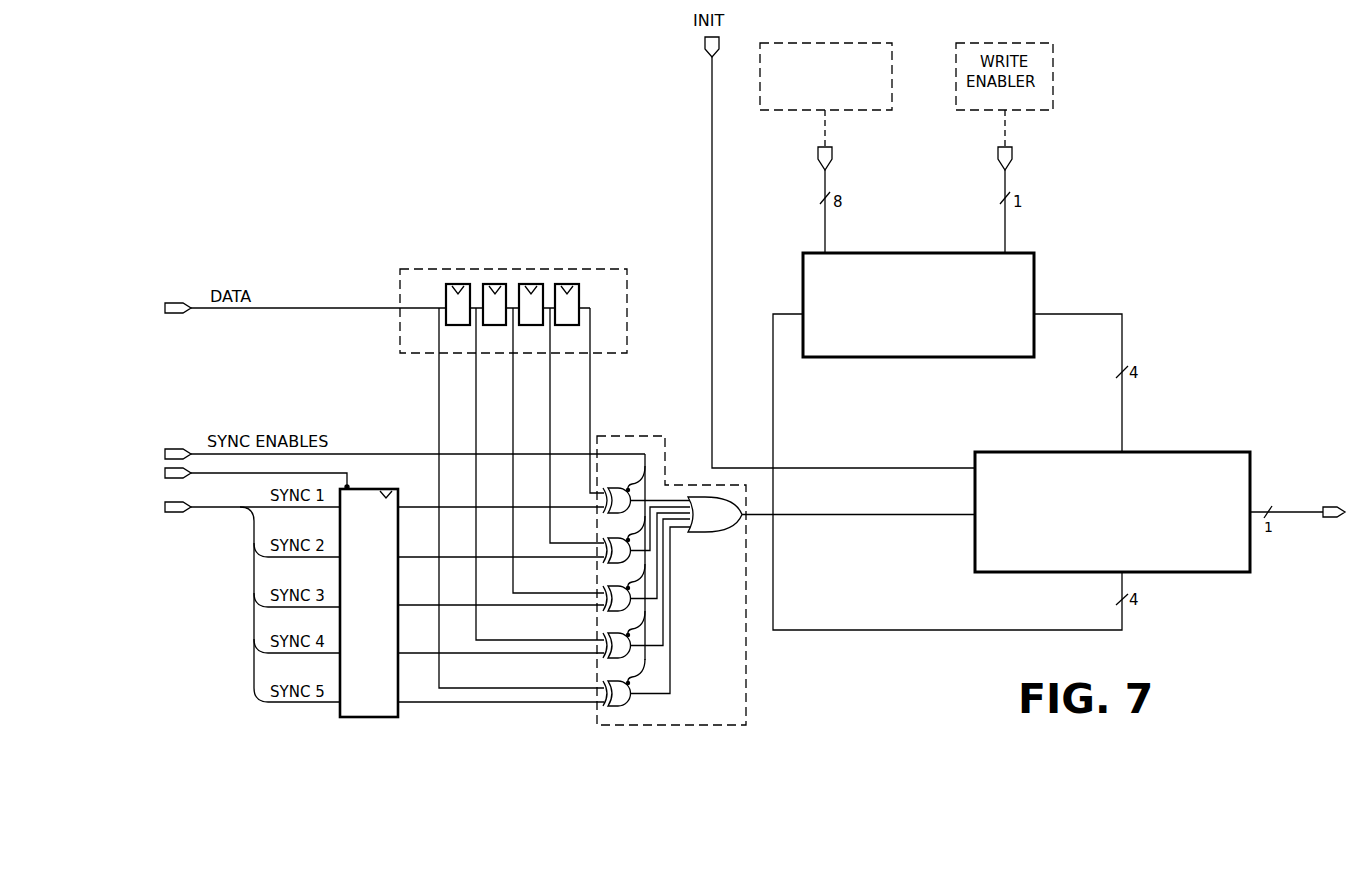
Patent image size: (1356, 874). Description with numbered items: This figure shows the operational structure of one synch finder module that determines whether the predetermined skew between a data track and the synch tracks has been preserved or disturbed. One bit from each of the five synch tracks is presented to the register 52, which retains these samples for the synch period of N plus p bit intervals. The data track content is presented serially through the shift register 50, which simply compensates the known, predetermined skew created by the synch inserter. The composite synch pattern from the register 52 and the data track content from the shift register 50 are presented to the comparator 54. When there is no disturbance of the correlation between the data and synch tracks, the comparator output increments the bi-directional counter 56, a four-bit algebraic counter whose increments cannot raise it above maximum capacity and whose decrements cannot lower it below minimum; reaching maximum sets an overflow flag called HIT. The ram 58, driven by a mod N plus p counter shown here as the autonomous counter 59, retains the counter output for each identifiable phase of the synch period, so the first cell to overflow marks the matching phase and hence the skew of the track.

The shift register 50 is at (575, 268).
The register 52 is at (355, 703).
The comparator 54 is at (745, 712).
The bi-directional counter 56 is at (1200, 462).
The ram 58 is at (927, 340).
The autonomous mod N+P counter 59 is at (880, 100).